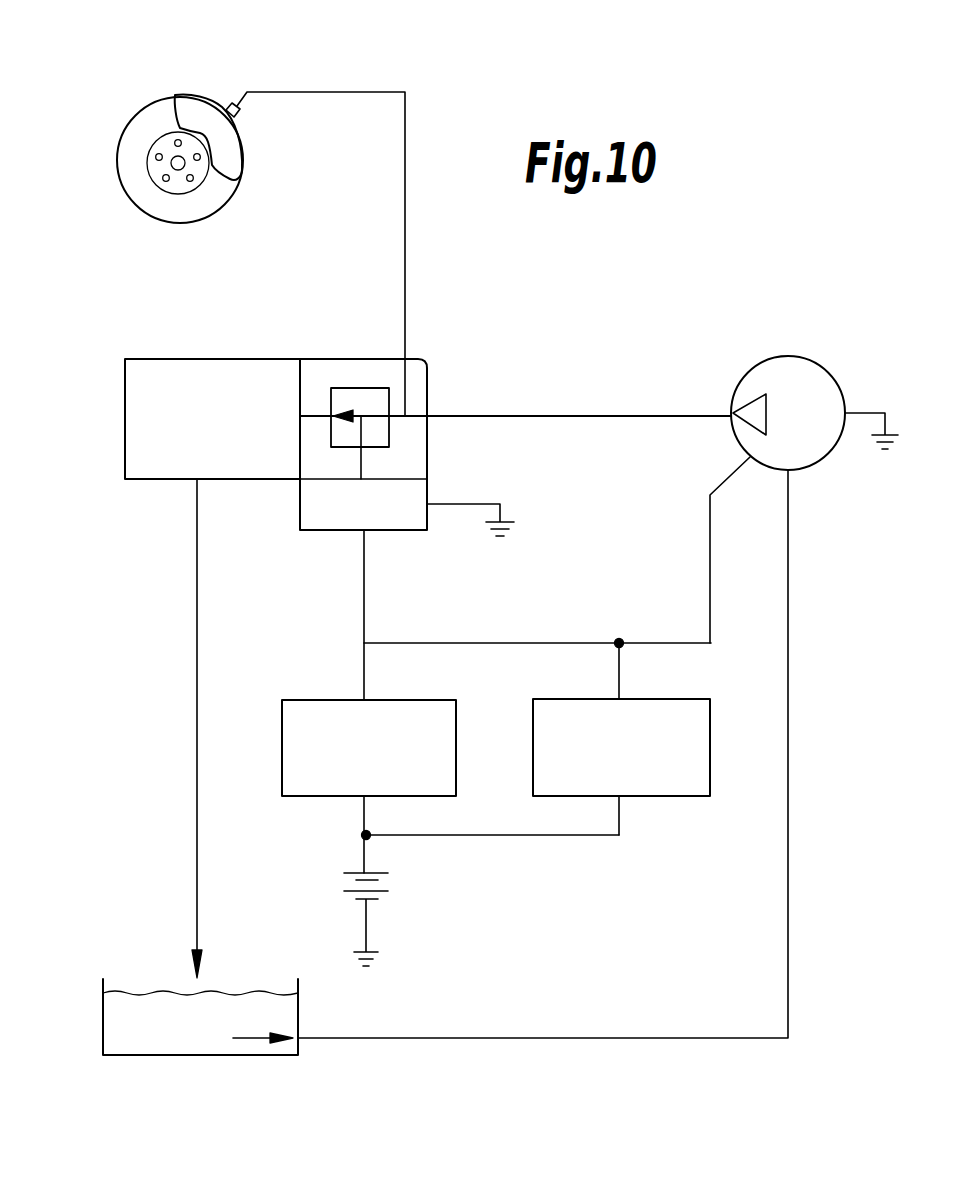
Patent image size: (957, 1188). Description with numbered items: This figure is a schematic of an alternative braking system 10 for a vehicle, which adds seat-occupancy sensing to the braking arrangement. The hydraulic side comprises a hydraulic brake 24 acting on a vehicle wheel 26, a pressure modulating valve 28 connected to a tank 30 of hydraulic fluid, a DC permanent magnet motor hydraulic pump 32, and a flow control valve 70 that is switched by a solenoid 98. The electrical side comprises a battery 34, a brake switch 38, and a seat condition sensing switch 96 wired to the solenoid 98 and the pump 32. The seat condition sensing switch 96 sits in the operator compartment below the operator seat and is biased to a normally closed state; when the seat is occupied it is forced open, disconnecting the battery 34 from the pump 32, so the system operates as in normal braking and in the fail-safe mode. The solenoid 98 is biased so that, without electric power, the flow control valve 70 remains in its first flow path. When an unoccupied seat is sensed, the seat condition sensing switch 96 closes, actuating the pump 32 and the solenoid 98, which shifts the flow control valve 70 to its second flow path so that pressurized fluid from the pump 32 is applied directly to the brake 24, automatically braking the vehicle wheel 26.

The braking system 10 is at (522, 360).
The hydraulic brake 24 is at (192, 108).
The vehicle wheel 26 is at (140, 118).
The pressure modulating valve 28 is at (125, 410).
The tank 30 is at (177, 1052).
The DC hydraulic pump 32 is at (752, 370).
The battery 34 is at (380, 895).
The brake switch 38 is at (710, 752).
The flow control valve 70 is at (430, 369).
The seat condition sensing switch 96 is at (312, 798).
The solenoid 98 is at (318, 531).